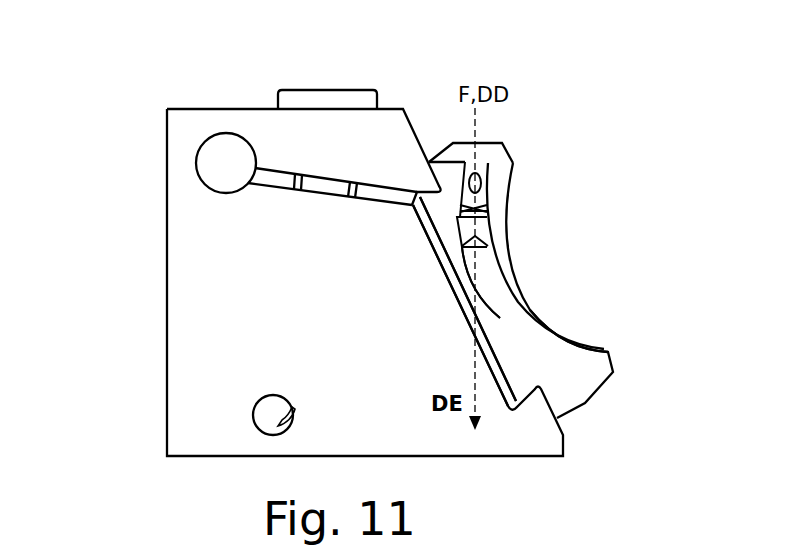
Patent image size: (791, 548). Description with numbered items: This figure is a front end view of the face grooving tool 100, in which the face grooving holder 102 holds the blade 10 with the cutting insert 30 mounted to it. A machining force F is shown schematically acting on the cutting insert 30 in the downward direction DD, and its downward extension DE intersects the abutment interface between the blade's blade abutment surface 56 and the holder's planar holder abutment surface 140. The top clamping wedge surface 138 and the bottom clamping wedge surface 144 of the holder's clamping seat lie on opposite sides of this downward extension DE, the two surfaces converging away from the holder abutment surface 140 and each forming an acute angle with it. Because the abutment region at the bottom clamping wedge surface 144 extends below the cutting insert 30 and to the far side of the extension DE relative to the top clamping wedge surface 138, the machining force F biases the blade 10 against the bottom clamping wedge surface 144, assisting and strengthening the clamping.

The face grooving tool 100 is at (151, 70).
The face grooving holder 102 is at (157, 213).
The blade 10 is at (530, 126).
The top clamping wedge surface 138 is at (442, 198).
The cutting insert 30 is at (480, 231).
The holder abutment surface 140 is at (444, 272).
The blade abutment surface 56 is at (448, 292).
The bottom clamping wedge surface 144 is at (527, 388).